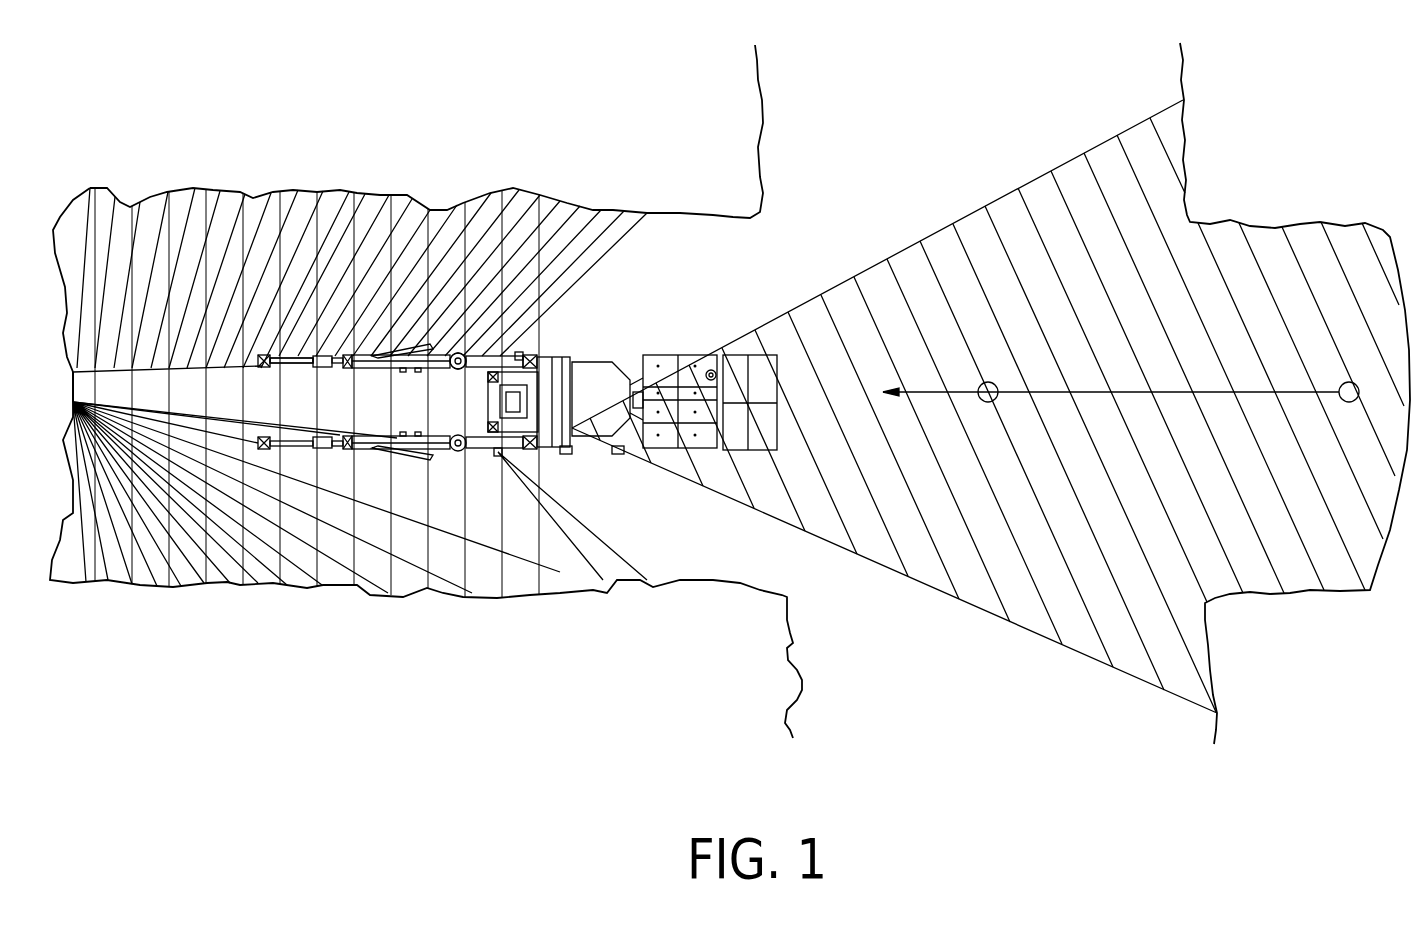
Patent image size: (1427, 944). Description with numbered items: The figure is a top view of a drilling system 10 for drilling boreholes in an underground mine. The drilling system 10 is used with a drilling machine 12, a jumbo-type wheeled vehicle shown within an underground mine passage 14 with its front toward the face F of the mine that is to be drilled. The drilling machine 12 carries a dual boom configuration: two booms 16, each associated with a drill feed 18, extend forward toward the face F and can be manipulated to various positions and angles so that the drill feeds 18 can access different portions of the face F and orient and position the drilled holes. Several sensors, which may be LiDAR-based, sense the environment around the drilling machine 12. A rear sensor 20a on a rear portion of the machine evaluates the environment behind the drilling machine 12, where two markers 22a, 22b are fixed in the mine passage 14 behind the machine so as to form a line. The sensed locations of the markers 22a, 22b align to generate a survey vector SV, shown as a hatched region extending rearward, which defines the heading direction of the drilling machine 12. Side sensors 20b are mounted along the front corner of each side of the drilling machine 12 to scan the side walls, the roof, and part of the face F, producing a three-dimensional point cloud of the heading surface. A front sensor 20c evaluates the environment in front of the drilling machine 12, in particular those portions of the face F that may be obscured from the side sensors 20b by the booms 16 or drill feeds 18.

The drilling system 10 is at (538, 112).
The drilling machine 12 is at (620, 350).
The mine passage 14 is at (758, 551).
The boom 16 is at (487, 347).
The drill feed 18 is at (297, 360).
The rear sensor 20a is at (620, 453).
The side sensor 20b is at (523, 356).
The front sensor 20c is at (564, 455).
The marker 22a is at (993, 403).
The marker 22b is at (1340, 388).
The face F is at (75, 368).
The survey vector SV is at (1087, 390).